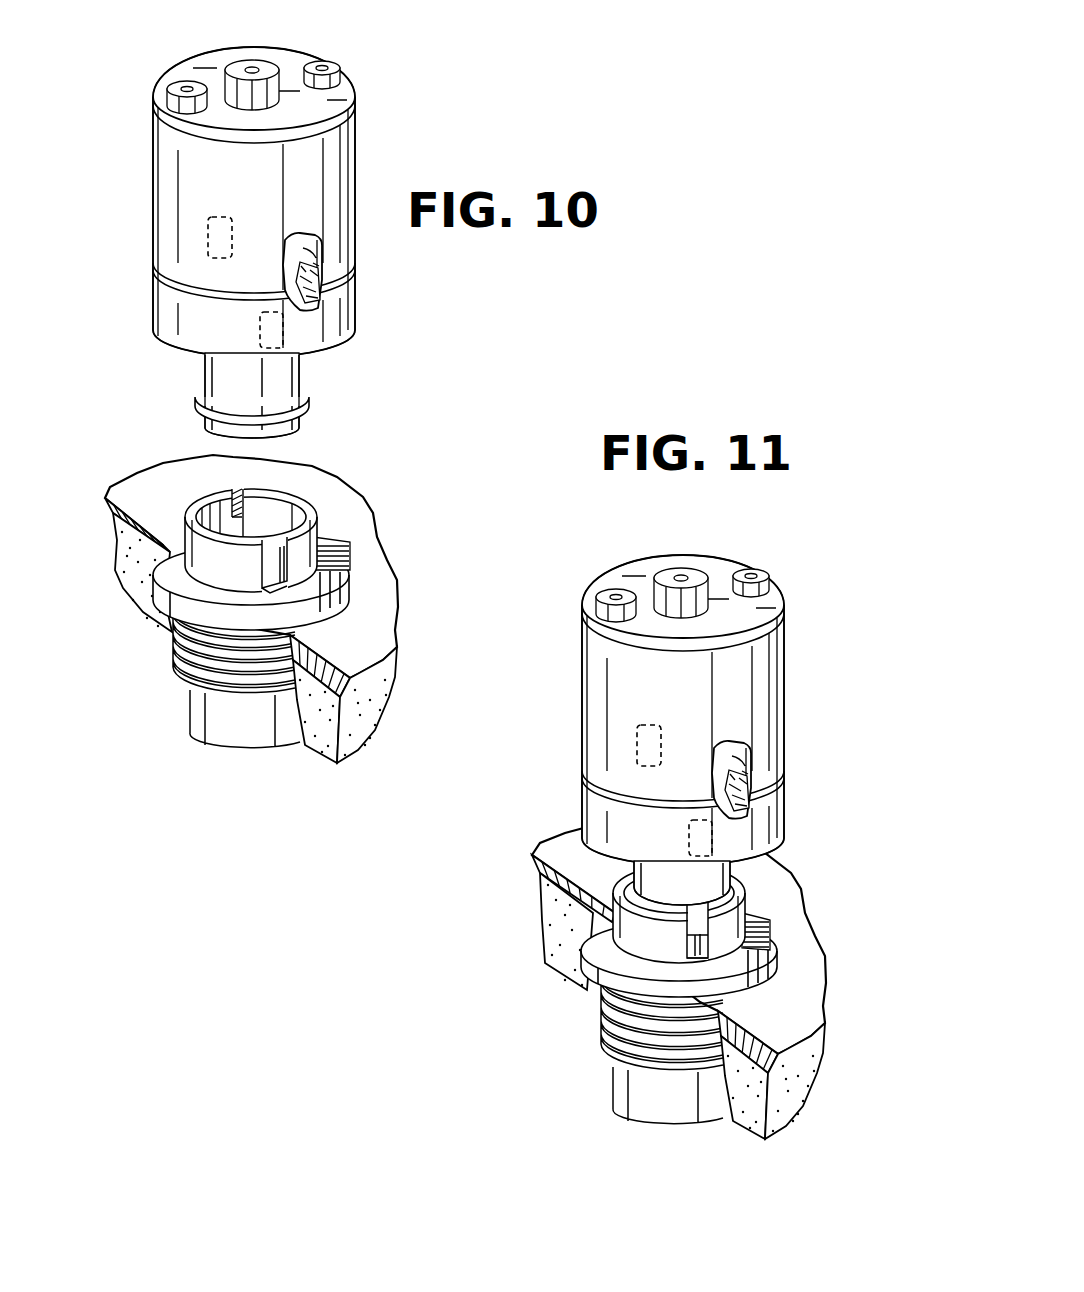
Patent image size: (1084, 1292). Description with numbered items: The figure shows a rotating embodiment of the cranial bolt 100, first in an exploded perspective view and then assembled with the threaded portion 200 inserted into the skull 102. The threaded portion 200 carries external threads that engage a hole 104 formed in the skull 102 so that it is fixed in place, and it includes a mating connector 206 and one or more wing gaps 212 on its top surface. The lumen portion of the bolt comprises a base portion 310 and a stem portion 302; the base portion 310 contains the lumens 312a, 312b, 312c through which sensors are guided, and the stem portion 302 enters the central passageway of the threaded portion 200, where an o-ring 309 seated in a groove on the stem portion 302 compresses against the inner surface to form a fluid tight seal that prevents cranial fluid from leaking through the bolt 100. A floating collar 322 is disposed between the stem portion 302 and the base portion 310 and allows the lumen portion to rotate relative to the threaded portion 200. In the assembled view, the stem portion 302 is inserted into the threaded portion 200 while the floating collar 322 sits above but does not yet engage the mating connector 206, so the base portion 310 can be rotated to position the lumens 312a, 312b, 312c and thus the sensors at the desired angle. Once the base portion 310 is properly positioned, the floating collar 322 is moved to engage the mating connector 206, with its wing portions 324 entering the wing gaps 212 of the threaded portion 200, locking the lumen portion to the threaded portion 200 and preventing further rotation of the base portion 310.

In FIG. 10, the cranial bolt 100 is at (280, 220).
In FIG. 11, the cranial bolt 100 is at (658, 702).
In FIG. 10, the skull 102 is at (127, 553).
In FIG. 11, the skull 102 is at (558, 928).
In FIG. 10, the hole 104 is at (283, 722).
In FIG. 11, the hole 104 is at (708, 1097).
In FIG. 10, the threaded portion 200 is at (170, 638).
In FIG. 11, the threaded portion 200 is at (592, 990).
In FIG. 10, the mating connector 206 is at (317, 537).
In FIG. 11, the mating connector 206 is at (678, 953).
In FIG. 10, the wing gaps 212 is at (232, 490).
In FIG. 11, the wing gaps 212 is at (747, 920).
In FIG. 10, the stem portion 302 is at (215, 378).
In FIG. 11, the stem portion 302 is at (693, 903).
In FIG. 10, the o-ring 309 is at (310, 398).
In FIG. 11, the o-ring 309 is at (705, 955).
In FIG. 10, the base portion 310 is at (166, 182).
In FIG. 11, the base portion 310 is at (762, 678).
In FIG. 10, the lumen 312a is at (251, 60).
In FIG. 11, the lumen 312a is at (684, 566).
In FIG. 10, the lumen 312b is at (186, 80).
In FIG. 11, the lumen 312b is at (614, 588).
In FIG. 10, the lumen 312c is at (338, 67).
In FIG. 11, the lumen 312c is at (770, 567).
In FIG. 10, the floating collar 322 is at (343, 302).
In FIG. 11, the floating collar 322 is at (600, 808).
In FIG. 10, the wing portion 324 is at (205, 241).
In FIG. 11, the wing portion 324 is at (636, 742).